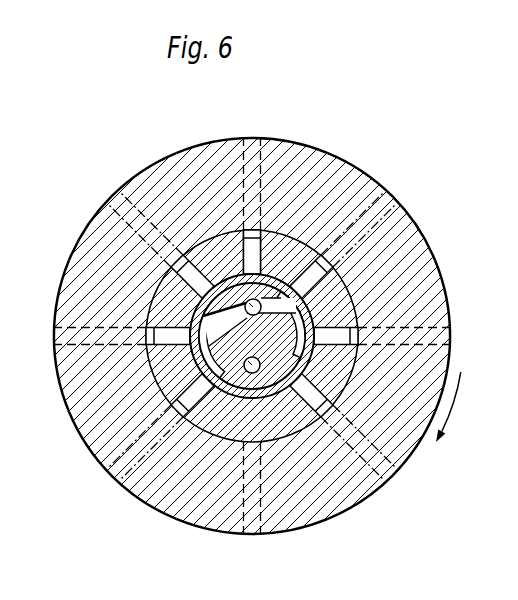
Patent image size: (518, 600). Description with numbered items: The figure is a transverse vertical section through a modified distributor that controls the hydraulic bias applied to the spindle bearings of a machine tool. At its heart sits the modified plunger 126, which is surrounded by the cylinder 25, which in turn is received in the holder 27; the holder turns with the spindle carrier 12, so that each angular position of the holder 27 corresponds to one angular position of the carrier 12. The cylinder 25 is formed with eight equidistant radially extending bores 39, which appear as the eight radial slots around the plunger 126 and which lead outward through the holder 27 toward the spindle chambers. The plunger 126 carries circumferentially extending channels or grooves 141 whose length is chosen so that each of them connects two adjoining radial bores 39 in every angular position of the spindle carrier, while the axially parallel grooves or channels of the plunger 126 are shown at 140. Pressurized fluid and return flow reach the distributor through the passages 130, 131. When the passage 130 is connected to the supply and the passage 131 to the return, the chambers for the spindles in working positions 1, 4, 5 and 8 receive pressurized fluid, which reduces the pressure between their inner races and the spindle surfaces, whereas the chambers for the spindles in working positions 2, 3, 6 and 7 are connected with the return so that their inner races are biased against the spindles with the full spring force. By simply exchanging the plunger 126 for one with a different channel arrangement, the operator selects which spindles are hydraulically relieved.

The working position one 1 is at (469, 351).
The working position two 2 is at (405, 504).
The working position three 3 is at (256, 561).
The working position four 4 is at (98, 501).
The working position five 5 is at (38, 347).
The working position six 6 is at (112, 198).
The working position seven 7 is at (246, 130).
The working position eight 8 is at (412, 197).
The carrier 12 is at (477, 407).
The cylinder 25 is at (338, 385).
The holder 27 is at (322, 493).
The radial bores 39 is at (337, 263).
The plunger 126 is at (318, 425).
The passage 130 is at (313, 277).
The passage 131 is at (150, 500).
The axially parallel grooves 140 is at (256, 240).
The circumferentially extending grooves 141 is at (300, 323).